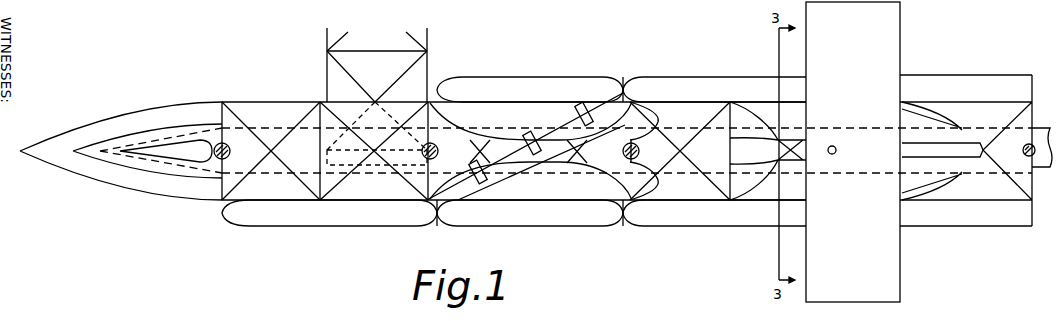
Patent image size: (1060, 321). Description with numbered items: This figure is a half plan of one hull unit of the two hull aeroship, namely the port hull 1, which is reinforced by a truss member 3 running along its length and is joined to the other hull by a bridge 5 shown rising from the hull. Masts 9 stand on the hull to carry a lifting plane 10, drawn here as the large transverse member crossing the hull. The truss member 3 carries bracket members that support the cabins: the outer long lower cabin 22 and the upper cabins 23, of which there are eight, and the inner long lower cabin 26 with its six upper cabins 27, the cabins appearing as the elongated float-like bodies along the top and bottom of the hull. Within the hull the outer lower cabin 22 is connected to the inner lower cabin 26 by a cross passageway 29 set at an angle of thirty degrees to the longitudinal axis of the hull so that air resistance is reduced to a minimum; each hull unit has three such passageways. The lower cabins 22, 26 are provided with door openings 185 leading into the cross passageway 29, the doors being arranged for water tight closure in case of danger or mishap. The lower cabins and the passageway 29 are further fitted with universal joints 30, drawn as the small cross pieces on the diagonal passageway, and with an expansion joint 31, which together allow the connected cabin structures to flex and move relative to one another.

The port hull 1 is at (257, 130).
The truss member 3 is at (275, 102).
The bridge 5 is at (327, 63).
The mast 9 is at (231, 153).
The lifting plane 10 is at (902, 53).
The long lower cabin 22 is at (630, 220).
The upper cabin 23 is at (317, 219).
The long lower cabin 26 is at (630, 75).
The upper cabin 27 is at (518, 75).
The cross passageway 29 is at (510, 155).
The universal joint 30 is at (578, 108).
The expansion joint 31 is at (530, 138).
The door opening 185 is at (437, 203).